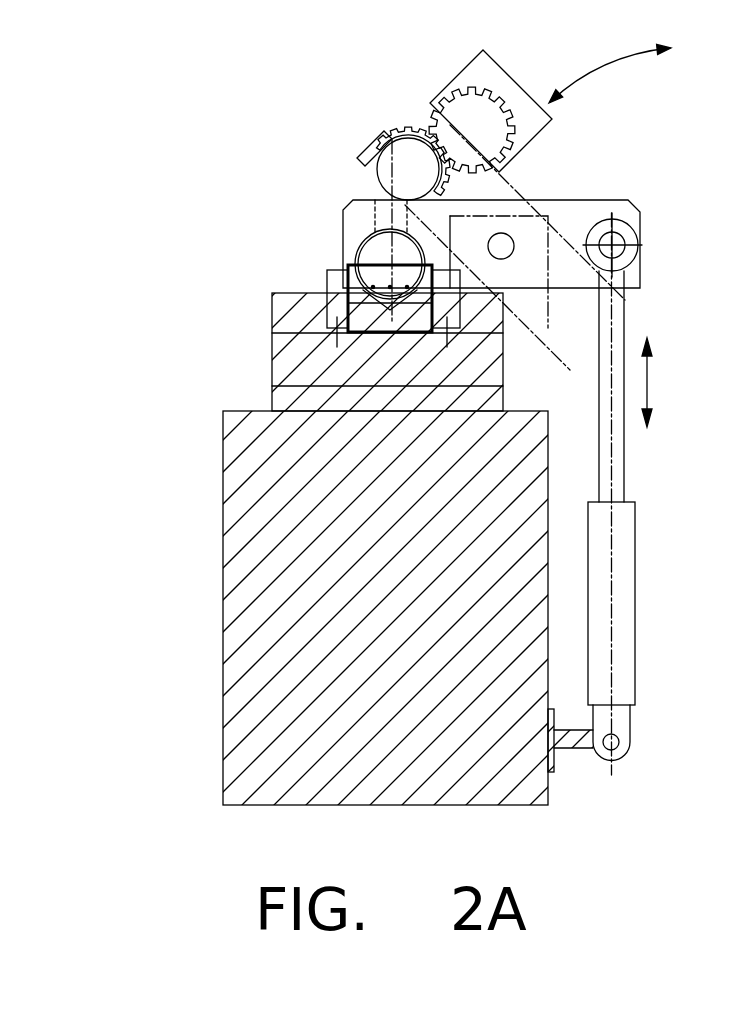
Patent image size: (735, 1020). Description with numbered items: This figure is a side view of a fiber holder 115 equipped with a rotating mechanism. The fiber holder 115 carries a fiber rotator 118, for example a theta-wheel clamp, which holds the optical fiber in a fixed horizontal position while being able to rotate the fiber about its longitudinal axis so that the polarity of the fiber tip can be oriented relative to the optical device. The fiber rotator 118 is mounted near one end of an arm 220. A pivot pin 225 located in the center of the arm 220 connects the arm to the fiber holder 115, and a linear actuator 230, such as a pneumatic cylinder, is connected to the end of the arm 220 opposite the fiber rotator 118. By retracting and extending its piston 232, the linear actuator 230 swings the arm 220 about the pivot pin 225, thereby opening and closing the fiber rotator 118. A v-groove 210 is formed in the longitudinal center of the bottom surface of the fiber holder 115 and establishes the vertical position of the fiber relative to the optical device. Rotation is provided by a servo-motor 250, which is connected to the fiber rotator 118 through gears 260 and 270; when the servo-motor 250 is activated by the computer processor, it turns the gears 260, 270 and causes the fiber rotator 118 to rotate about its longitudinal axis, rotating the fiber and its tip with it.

The fiber holder 115 is at (223, 490).
The fiber rotator 118 is at (380, 185).
The v-groove 210 is at (340, 343).
The arm 220 is at (598, 200).
The pivot pin 225 is at (500, 237).
The linear actuator 230 is at (636, 572).
The piston 232 is at (622, 483).
The servo-motor 250 is at (470, 63).
The gear 260 is at (441, 95).
The gear 270 is at (403, 136).